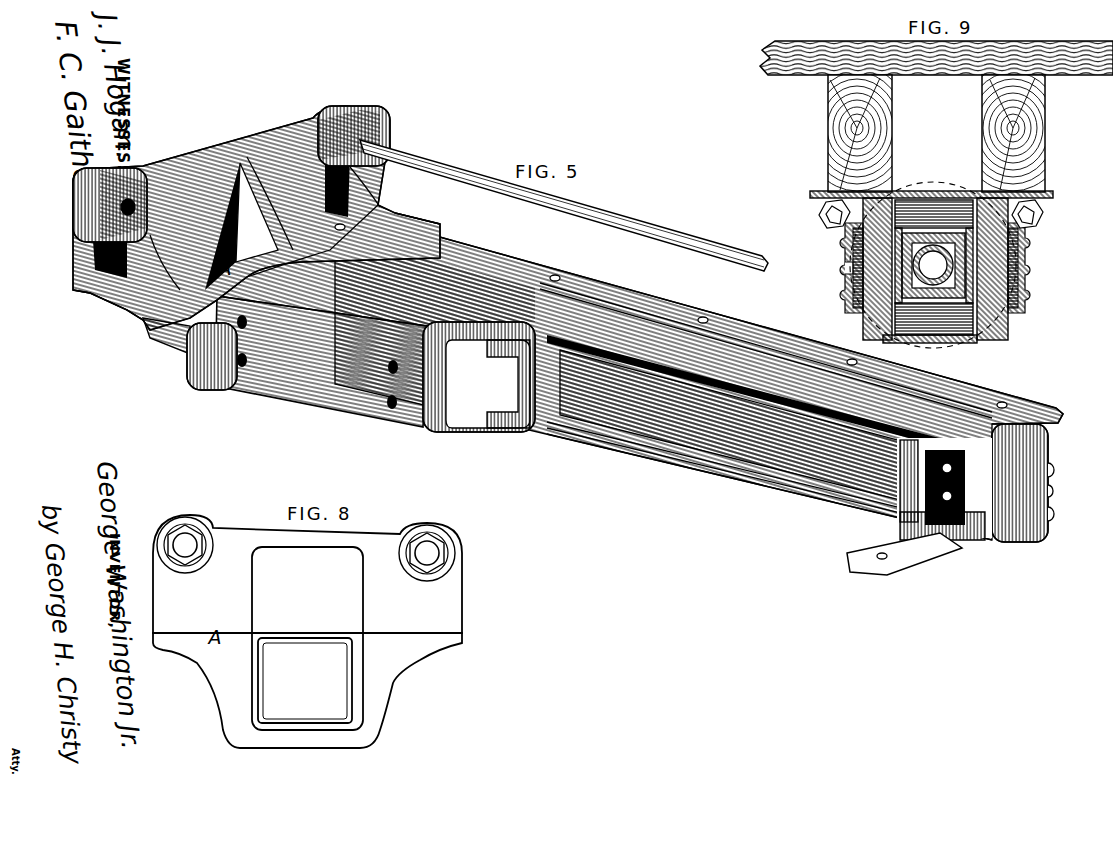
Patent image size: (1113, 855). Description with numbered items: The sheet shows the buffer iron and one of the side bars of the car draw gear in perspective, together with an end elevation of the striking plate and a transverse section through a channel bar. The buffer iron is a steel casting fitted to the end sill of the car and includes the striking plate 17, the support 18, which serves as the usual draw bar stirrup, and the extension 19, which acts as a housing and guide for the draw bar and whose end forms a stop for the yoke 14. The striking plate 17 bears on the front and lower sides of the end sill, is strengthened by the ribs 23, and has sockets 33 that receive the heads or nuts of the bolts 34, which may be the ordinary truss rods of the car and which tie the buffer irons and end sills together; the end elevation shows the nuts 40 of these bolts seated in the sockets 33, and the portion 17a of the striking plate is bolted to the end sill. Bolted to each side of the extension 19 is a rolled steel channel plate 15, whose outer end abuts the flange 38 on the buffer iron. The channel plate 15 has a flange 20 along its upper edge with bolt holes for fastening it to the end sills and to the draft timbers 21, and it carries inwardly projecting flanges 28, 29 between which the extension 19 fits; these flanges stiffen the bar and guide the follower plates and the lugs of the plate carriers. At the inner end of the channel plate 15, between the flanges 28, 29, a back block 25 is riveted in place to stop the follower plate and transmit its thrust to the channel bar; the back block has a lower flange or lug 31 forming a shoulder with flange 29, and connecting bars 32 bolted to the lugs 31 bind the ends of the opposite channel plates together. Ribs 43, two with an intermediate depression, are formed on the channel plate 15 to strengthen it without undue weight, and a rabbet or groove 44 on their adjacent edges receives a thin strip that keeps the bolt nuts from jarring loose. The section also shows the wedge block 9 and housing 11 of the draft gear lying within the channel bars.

In FIG. 9, the wedge block 9 is at (912, 262).
In FIG. 9, the housing 11 is at (915, 196).
In FIG. 9, the yoke 14 is at (845, 290).
In FIG. 5, the channel plate 15 is at (770, 435).
In FIG. 9, the channel plate 15 is at (1020, 265).
In FIG. 5, the striking plate 17 is at (256, 218).
In FIG. 8, the striking plate 17 is at (307, 622).
In FIG. 5, the portion of the striking plate 17a is at (186, 268).
In FIG. 5, the support 18 is at (160, 347).
In FIG. 8, the support 18 is at (305, 680).
In FIG. 5, the extension 19 is at (375, 328).
In FIG. 5, the flange 20 is at (530, 268).
In FIG. 9, the flange 20 is at (810, 195).
In FIG. 9, the draft timber 21 is at (935, 128).
In FIG. 5, the rib 23 is at (272, 208).
In FIG. 5, the back block 25 is at (1020, 483).
In FIG. 5, the flange 28 is at (1040, 452).
In FIG. 9, the flange 28 is at (898, 172).
In FIG. 5, the flange 29 is at (762, 473).
In FIG. 9, the flange 29 is at (929, 331).
In FIG. 5, the flange or lug 31 is at (902, 530).
In FIG. 5, the connecting bar 32 is at (904, 559).
In FIG. 5, the socket 33 is at (397, 128).
In FIG. 8, the socket 33 is at (206, 558).
In FIG. 5, the bolt 34 is at (564, 205).
In FIG. 5, the flange 38 is at (193, 385).
In FIG. 8, the flange 38 is at (207, 690).
In FIG. 8, the nut 40 is at (210, 536).
In FIG. 5, the rib 43 is at (1050, 470).
In FIG. 9, the rib 43 is at (843, 240).
In FIG. 5, the rabbet or groove 44 is at (1049, 492).
In FIG. 9, the rabbet or groove 44 is at (845, 265).